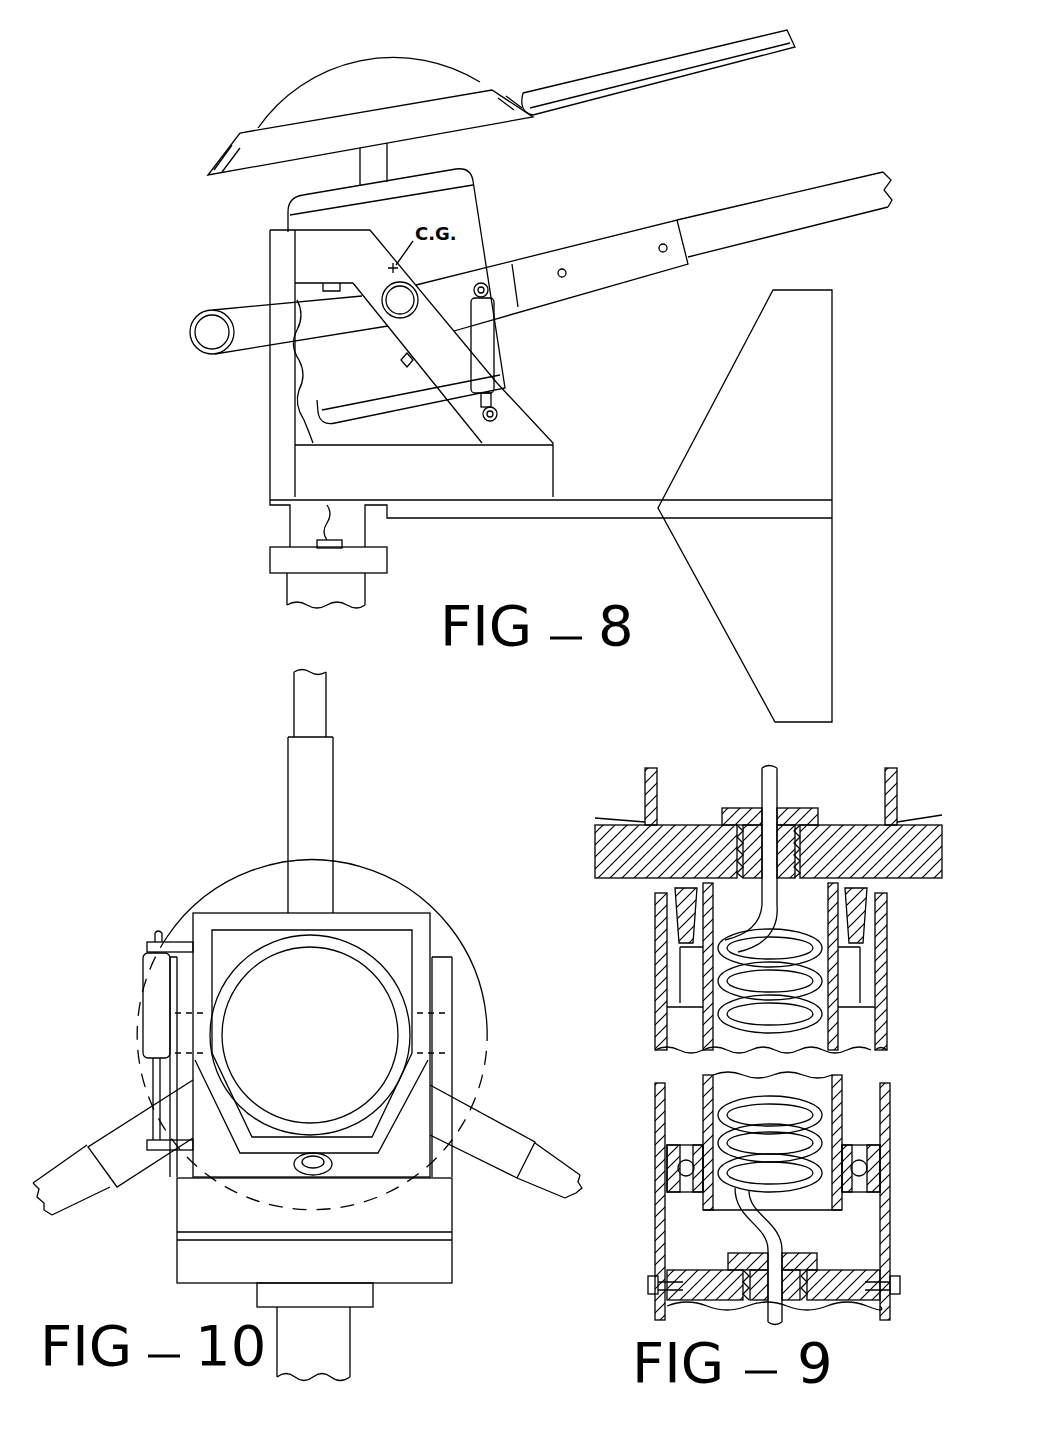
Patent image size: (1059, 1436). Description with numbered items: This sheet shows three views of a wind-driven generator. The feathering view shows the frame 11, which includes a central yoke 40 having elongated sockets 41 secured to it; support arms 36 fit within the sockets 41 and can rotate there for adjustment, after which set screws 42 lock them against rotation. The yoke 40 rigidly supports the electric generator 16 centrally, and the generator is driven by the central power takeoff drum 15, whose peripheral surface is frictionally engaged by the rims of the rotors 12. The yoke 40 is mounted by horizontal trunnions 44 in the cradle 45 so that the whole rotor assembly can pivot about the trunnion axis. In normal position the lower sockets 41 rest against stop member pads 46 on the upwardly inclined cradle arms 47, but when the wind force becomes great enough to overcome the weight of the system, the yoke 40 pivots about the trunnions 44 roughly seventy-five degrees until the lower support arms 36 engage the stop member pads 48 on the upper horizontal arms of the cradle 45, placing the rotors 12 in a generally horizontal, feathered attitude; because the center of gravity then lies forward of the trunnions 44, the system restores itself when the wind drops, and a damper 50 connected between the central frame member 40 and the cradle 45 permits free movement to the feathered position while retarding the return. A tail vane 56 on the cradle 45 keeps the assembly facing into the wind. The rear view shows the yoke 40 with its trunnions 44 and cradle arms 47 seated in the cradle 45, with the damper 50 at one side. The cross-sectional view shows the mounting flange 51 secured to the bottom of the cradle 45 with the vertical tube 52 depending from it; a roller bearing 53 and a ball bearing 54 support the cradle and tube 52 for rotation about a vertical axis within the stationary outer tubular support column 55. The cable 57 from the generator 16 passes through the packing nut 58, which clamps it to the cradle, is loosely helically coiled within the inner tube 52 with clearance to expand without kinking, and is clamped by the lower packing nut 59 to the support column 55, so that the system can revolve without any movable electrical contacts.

In FIG. 8, the frame 11 is at (648, 218).
In FIG. 8, the rotor 12 is at (599, 72).
In FIG. 8, the central power takeoff drum 15 is at (484, 75).
In FIG. 8, the electric generator 16 is at (468, 197).
In FIG. 10, the electric generator 16 is at (328, 1073).
In FIG. 8, the support arm 36 is at (778, 208).
In FIG. 10, the support arm 36 is at (330, 712).
In FIG. 8, the central yoke 40 is at (509, 275).
In FIG. 10, the central yoke 40 is at (405, 910).
In FIG. 8, the elongated socket 41 is at (623, 270).
In FIG. 10, the elongated socket 41 is at (330, 812).
In FIG. 8, the set screw 42 is at (562, 269).
In FIG. 8, the horizontal trunnion 44 is at (407, 313).
In FIG. 10, the horizontal trunnion 44 is at (183, 1028).
In FIG. 8, the cradle 45 is at (549, 430).
In FIG. 10, the cradle 45 is at (458, 1254).
In FIG. 8, the stop member pad 46 is at (400, 356).
In FIG. 10, the cradle arm 47 is at (443, 1073).
In FIG. 8, the stop member pad 48 is at (293, 282).
In FIG. 8, the damper 50 is at (497, 347).
In FIG. 10, the damper 50 is at (143, 1042).
In FIG. 8, the mounting flange 51 is at (268, 565).
In FIG. 10, the mounting flange 51 is at (374, 1306).
In FIG. 9, the mounting flange 51 is at (605, 847).
In FIG. 9, the vertical tube 52 is at (838, 1020).
In FIG. 9, the roller bearing 53 is at (862, 910).
In FIG. 9, the ball bearing 54 is at (880, 1143).
In FIG. 8, the outer tubular support column 55 is at (290, 600).
In FIG. 9, the outer tubular support column 55 is at (887, 1217).
In FIG. 8, the tail vane 56 is at (733, 387).
In FIG. 8, the cable 57 is at (312, 422).
In FIG. 9, the cable 57 is at (777, 930).
In FIG. 9, the packing nut 58 is at (797, 812).
In FIG. 9, the packing nut 59 is at (813, 1255).